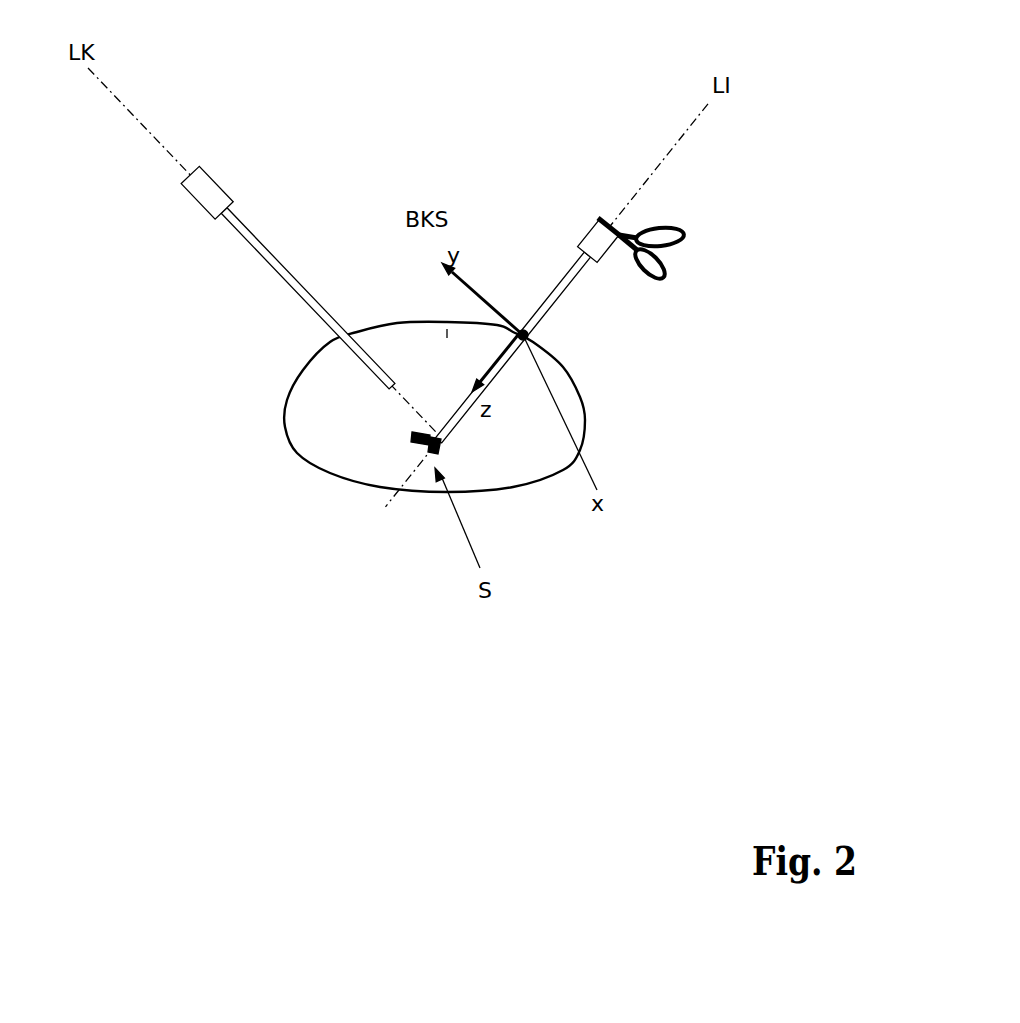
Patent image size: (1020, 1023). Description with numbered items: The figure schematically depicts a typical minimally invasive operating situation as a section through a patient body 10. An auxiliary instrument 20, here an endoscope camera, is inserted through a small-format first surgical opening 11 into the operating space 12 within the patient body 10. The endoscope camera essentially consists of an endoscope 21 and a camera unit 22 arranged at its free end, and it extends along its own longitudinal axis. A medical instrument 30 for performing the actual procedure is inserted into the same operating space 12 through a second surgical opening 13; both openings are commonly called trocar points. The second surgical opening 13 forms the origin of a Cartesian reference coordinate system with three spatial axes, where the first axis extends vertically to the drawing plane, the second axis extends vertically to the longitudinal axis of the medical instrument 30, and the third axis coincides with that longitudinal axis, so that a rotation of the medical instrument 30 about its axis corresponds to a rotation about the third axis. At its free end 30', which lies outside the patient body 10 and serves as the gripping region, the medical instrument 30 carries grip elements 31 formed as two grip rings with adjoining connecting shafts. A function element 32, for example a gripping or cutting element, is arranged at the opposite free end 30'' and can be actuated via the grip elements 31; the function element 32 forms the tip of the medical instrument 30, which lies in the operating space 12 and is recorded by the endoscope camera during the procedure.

The patient body 10 is at (585, 432).
The first surgical opening 11 is at (283, 355).
The operating space 12 is at (487, 457).
The second surgical opening 13 is at (575, 353).
The auxiliary instrument 20 is at (262, 250).
The endoscope 21 is at (282, 260).
The camera unit 22 is at (193, 185).
The medical instrument 30 is at (558, 298).
The free end 30' is at (626, 141).
The free end 30'' is at (411, 346).
The grip element 31 is at (685, 233).
The function element 32 is at (427, 447).